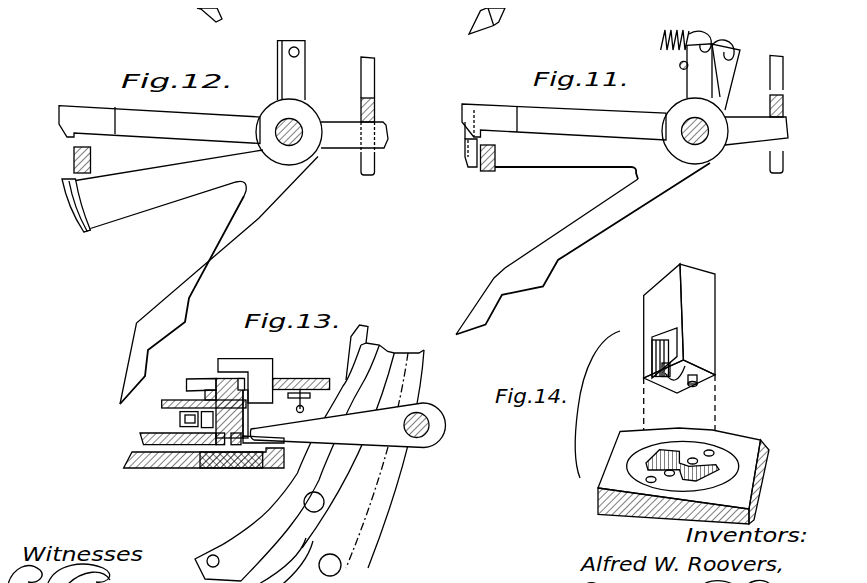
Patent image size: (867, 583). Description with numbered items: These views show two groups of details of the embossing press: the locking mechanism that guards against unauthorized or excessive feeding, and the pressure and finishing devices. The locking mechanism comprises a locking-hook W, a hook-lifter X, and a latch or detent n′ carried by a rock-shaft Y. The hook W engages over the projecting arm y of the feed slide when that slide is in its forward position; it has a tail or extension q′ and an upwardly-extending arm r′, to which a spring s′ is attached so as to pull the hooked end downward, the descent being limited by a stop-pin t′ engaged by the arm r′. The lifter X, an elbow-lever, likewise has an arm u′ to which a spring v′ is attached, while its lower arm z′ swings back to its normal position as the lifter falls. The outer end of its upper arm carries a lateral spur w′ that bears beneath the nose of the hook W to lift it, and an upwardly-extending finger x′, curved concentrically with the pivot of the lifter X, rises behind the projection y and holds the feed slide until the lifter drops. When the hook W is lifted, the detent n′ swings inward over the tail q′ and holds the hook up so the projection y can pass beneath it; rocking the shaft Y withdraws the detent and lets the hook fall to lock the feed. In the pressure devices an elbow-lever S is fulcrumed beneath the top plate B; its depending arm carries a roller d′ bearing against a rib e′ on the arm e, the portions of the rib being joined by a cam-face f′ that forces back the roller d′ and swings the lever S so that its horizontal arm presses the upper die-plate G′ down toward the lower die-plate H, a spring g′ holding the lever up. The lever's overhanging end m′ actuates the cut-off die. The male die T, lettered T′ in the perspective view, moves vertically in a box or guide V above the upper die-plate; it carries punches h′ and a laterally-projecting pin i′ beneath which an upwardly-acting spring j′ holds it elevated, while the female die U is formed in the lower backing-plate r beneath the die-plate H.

In FIG. 12, the locking-hook W is at (150, 122).
In FIG. 11, the locking-hook W is at (524, 104).
In FIG. 12, the hook-lifter X is at (135, 199).
In FIG. 11, the hook-lifter X is at (539, 149).
In FIG. 12, the rock-shaft Y is at (366, 71).
In FIG. 12, the projecting arm of the feed-bar y is at (83, 146).
In FIG. 11, the projecting arm of the feed-bar y is at (482, 165).
In FIG. 12, the tail of the locking-hook q′ is at (333, 129).
In FIG. 13, the tail of the locking-hook q′ is at (172, 410).
In FIG. 12, the upwardly-extending arm of the locking-hook r′ is at (282, 66).
In FIG. 11, the upwardly-extending arm of the locking-hook r′ is at (682, 74).
In FIG. 12, the latch or detent n′ is at (368, 102).
In FIG. 11, the latch or detent n′ is at (778, 92).
In FIG. 12, the finger of the lifter x′ is at (59, 189).
In FIG. 11, the finger of the lifter x′ is at (459, 129).
In FIG. 12, the lateral spur of the lifter w′ is at (71, 222).
In FIG. 11, the lateral spur of the lifter w′ is at (458, 167).
In FIG. 12, the lower arm of the lifter z′ is at (192, 244).
In FIG. 11, the lower arm of the lifter z′ is at (605, 211).
In FIG. 11, the spring of the locking-hook s′ is at (682, 24).
In FIG. 11, the spring of the lifter v′ is at (717, 32).
In FIG. 11, the arm of the lifter u′ is at (720, 61).
In FIG. 11, the stop-pin t′ is at (674, 62).
In FIG. 13, the laterally-projecting pin i′ is at (159, 393).
In FIG. 13, the overhanging end of the lever m′ is at (230, 354).
In FIG. 13, the spring g′ is at (273, 369).
In FIG. 13, the top plate B is at (290, 357).
In FIG. 13, the upwardly-acting spring j′ is at (172, 412).
In FIG. 13, the upper die-plate G′ is at (134, 433).
In FIG. 13, the box or guide V is at (242, 408).
In FIG. 13, the elbow-lever S is at (347, 425).
In FIG. 13, the backing-plate r is at (127, 460).
In FIG. 13, the lower die-plate H is at (169, 445).
In FIG. 14, the lower die-plate H is at (734, 482).
In FIG. 13, the female die U is at (210, 464).
In FIG. 14, the female die U is at (711, 455).
In FIG. 13, the arm e is at (258, 508).
In FIG. 13, the cam-face f′ is at (363, 459).
In FIG. 13, the roller d′ is at (347, 560).
In FIG. 13, the rib e′ is at (284, 546).
In FIG. 14, the punches h′ is at (666, 339).
In FIG. 14, the male die T′ is at (700, 329).
In FIG. 14, the male die T is at (608, 496).